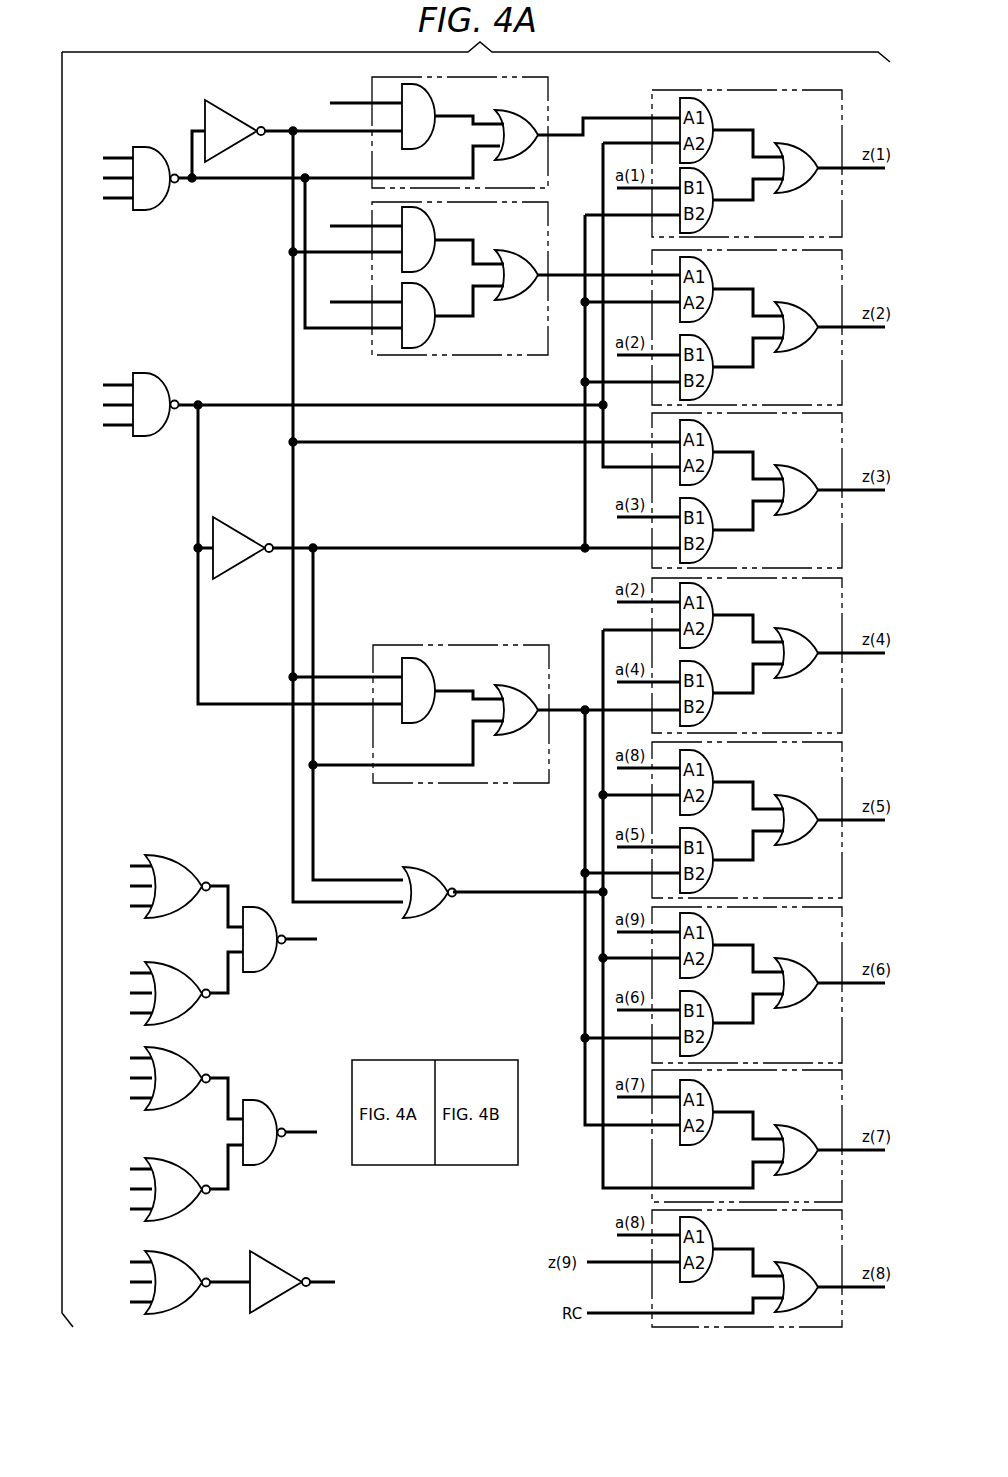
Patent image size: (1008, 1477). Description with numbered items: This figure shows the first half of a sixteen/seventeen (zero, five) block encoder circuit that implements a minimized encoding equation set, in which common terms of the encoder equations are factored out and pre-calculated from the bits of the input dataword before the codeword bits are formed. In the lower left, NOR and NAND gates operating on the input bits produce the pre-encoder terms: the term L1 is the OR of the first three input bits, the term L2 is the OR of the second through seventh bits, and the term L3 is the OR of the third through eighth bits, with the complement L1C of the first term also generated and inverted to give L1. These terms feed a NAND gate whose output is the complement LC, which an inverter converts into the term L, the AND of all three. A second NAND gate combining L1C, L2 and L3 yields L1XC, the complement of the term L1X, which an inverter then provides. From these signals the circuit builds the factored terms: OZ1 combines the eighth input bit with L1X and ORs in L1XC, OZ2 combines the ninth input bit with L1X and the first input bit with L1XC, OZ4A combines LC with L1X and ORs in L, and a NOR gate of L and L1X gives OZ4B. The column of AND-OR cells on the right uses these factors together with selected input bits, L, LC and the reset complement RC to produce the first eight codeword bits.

The pre-encoder term L1XC is at (284, 237).
The pre-encoder term L1X is at (436, 501).
The pre-encoded factor OZ1 is at (504, 130).
The pre-encoded factor OZ2 is at (504, 276).
The pre-encoder term LC is at (343, 538).
The pre-encoder term L is at (437, 698).
The pre-encoded factor OZ4A is at (541, 891).
The pre-encoded factor OZ4B is at (593, 909).
The pre-encoder term L3 is at (205, 940).
The pre-encoder term L2 is at (205, 1134).
The complement of pre-encoder term L1 L1C is at (171, 1282).
The pre-encoder term L1 is at (292, 1282).